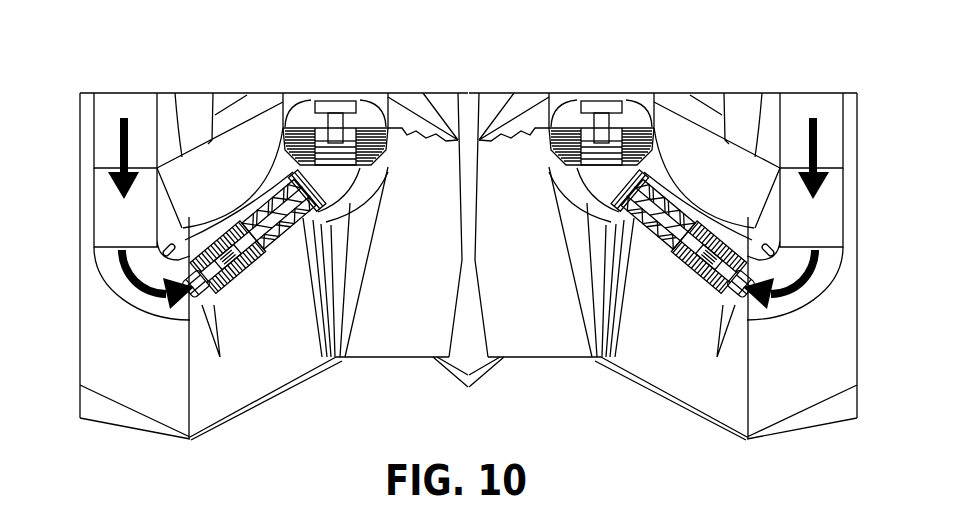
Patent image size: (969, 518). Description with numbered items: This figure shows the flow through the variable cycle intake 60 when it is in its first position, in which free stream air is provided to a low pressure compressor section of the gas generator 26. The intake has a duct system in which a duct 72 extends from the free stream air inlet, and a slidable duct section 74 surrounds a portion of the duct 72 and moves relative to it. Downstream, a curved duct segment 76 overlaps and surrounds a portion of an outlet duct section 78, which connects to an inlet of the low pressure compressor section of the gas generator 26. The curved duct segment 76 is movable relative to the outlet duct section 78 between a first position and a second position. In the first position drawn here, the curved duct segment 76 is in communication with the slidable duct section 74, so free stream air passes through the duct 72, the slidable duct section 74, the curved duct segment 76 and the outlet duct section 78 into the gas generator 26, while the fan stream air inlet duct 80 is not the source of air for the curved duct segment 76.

The variable cycle intake 60 is at (115, 68).
The gas generator 26 is at (245, 280).
The duct 72 is at (95, 133).
The slidable duct section 74 is at (95, 200).
The curved duct segment 76 is at (115, 293).
The outlet duct section 78 is at (193, 300).
The fan stream air inlet duct 80 is at (248, 150).